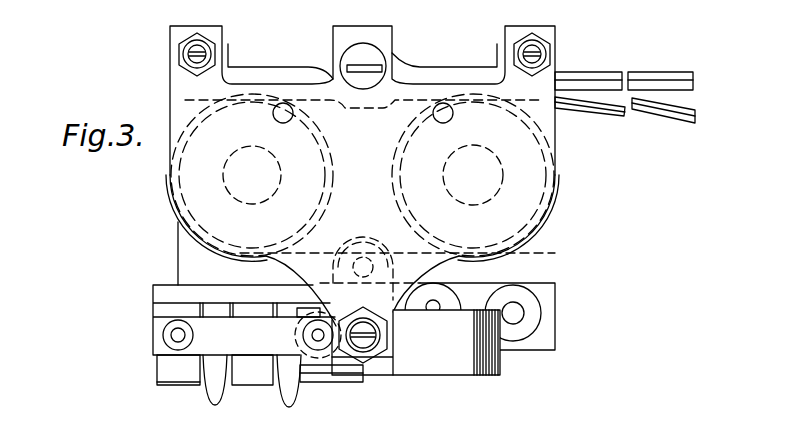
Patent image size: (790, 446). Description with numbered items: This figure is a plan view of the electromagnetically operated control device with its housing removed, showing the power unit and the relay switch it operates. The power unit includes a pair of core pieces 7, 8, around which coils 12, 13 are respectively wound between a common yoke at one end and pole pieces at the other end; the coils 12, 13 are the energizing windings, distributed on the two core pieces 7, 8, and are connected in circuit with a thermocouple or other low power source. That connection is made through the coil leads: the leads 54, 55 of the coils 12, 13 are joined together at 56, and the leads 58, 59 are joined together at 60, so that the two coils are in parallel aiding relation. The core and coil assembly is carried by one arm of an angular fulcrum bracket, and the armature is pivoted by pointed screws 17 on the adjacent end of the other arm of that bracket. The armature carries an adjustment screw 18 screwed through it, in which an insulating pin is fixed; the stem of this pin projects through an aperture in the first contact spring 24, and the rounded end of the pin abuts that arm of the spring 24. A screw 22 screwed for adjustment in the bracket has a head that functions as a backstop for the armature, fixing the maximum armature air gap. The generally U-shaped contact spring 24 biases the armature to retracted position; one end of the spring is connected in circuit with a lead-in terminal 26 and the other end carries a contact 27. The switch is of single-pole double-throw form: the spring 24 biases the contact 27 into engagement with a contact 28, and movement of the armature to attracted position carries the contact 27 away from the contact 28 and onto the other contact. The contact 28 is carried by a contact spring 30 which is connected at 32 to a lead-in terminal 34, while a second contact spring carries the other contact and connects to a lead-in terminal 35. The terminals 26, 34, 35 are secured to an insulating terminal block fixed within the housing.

The core piece 7 is at (497, 193).
The core piece 8 is at (225, 178).
The coil 12 is at (527, 244).
The coil 13 is at (205, 248).
The pointed screws 17 is at (187, 46).
The adjustment screw 18 is at (367, 342).
The screw 22 is at (357, 52).
The first contact spring 24 is at (480, 364).
The lead-in terminal 26 is at (322, 384).
The contact 27 is at (320, 312).
The contact 28 is at (317, 362).
The contact spring 30 is at (240, 347).
The connection 32 is at (162, 326).
The lead-in terminal 34 is at (172, 378).
The lead-in terminal 35 is at (260, 380).
The lead 54 is at (608, 101).
The lead 55 is at (593, 72).
The junction 56 is at (673, 78).
The lead 58 is at (583, 108).
The lead 59 is at (637, 82).
The junction 60 is at (673, 116).